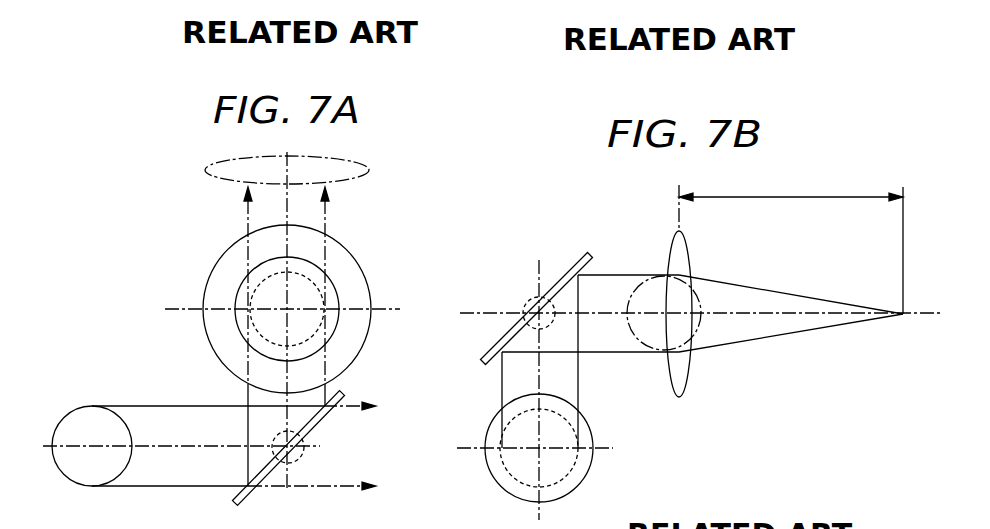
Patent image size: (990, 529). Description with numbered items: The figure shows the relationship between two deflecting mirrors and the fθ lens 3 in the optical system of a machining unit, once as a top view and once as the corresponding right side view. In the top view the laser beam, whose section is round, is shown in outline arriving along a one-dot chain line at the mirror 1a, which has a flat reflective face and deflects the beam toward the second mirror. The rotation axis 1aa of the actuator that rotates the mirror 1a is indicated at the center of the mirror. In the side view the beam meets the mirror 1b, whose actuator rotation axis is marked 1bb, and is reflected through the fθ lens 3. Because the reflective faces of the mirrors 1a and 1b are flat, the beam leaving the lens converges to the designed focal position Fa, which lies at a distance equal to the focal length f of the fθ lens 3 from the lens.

In FIG. 7A, the mirror 1a is at (325, 421).
In FIG. 7A, the rotation axis of actuator 1aa is at (303, 457).
In FIG. 7B, the mirror 1b is at (570, 270).
In FIG. 7B, the rotation axis of actuator 1bb is at (527, 296).
In FIG. 7B, the fθ lens 3 is at (683, 381).
In FIG. 7B, the focal length f is at (791, 186).
In FIG. 7B, the focal position Fa is at (903, 314).